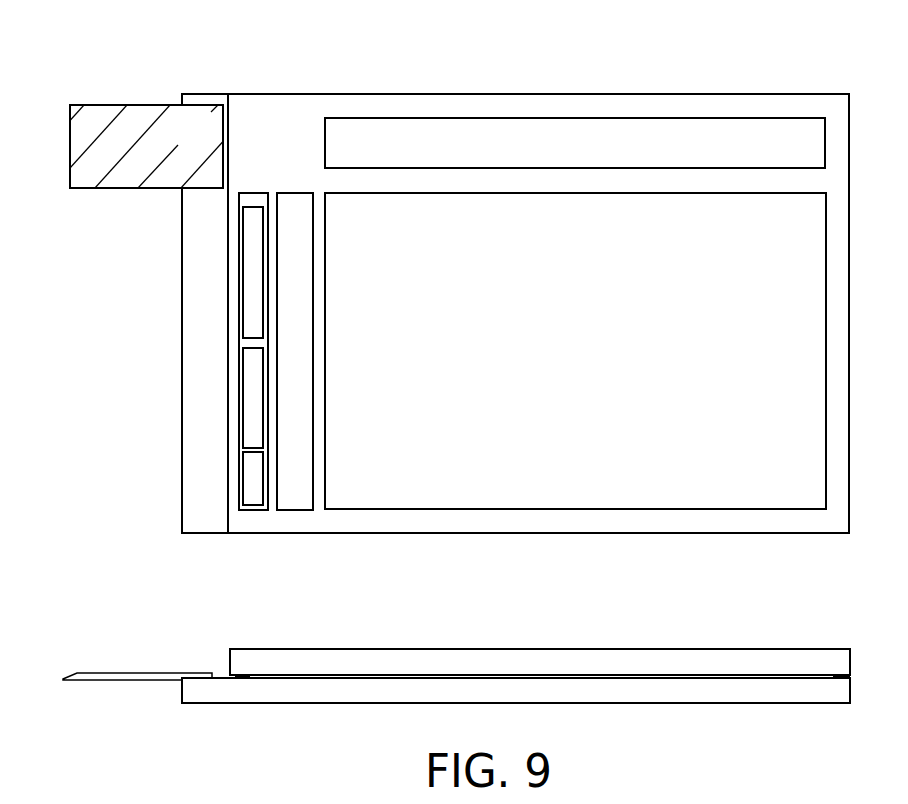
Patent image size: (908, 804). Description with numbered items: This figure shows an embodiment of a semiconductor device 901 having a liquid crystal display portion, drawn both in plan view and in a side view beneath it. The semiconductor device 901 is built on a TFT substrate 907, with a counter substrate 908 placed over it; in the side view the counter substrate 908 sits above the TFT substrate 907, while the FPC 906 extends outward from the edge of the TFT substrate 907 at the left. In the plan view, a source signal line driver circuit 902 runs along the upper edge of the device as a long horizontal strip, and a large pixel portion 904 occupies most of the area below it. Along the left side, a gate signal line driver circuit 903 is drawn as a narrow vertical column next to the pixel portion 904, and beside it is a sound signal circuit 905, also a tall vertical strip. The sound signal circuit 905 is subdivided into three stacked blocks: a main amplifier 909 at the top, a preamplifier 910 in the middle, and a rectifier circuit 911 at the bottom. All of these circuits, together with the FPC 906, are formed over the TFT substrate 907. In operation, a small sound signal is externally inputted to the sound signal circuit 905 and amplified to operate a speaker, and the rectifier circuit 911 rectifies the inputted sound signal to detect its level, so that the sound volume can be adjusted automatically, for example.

The semiconductor device 901 is at (620, 110).
The source signal line driver circuit 902 is at (575, 143).
The gate signal line driver circuit 903 is at (292, 498).
The pixel portion 904 is at (575, 351).
The sound signal circuit 905 is at (262, 198).
The FPC 906 is at (60, 672).
The TFT substrate 907 is at (833, 695).
The counter substrate 908 is at (815, 653).
The main amplifier 909 is at (248, 305).
The preamplifier 910 is at (248, 370).
The rectifier circuit 911 is at (248, 495).